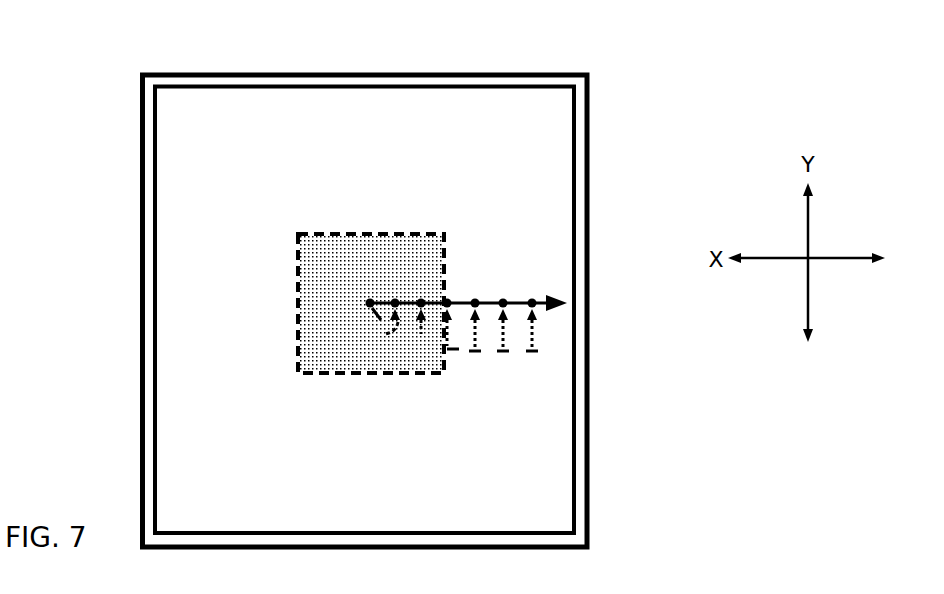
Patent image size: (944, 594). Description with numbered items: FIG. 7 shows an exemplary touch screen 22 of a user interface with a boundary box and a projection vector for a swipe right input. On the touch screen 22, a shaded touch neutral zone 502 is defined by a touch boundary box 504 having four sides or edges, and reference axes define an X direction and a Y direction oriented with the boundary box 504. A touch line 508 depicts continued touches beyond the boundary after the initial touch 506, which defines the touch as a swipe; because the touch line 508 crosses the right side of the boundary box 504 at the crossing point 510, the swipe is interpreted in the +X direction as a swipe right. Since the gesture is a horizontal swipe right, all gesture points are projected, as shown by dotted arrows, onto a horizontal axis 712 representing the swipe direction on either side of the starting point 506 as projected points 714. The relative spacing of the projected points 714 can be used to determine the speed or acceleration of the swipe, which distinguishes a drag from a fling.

The touch screen 22 is at (140, 167).
The touch neutral zone 502 is at (345, 340).
The touch boundary box 504 is at (298, 352).
The initial touch 506 is at (370, 300).
The touch line 508 is at (419, 345).
The crossing point 510 is at (458, 364).
The horizontal axis 712 is at (518, 300).
The projected points 714 is at (474, 300).